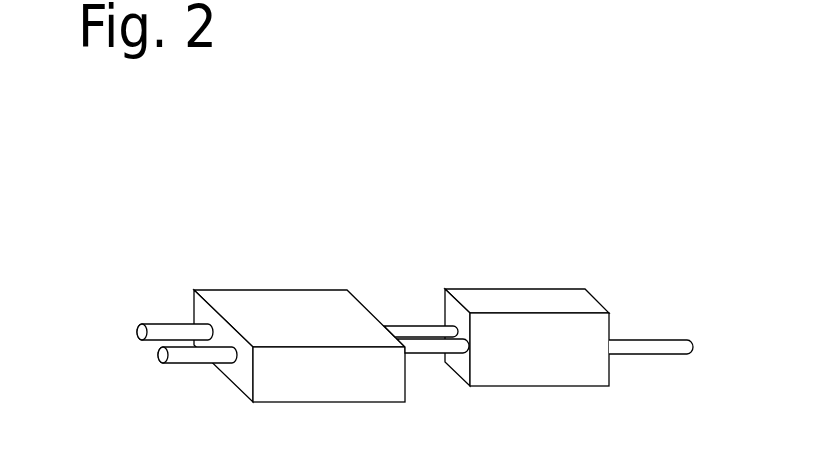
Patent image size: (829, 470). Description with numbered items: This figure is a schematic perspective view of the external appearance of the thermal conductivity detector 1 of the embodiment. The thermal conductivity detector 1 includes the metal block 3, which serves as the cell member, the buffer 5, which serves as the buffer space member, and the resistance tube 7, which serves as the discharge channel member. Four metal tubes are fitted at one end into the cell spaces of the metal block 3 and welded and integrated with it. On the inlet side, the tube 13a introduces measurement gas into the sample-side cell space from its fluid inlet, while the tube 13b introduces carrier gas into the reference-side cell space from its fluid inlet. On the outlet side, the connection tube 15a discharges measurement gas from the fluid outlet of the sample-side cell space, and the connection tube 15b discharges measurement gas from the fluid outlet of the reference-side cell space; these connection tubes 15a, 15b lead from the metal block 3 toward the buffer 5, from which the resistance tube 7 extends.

The thermal conductivity detector 1 is at (431, 233).
The metal block 3 is at (278, 288).
The buffer 5 is at (515, 288).
The resistance tube 7 is at (652, 338).
The tube 13a is at (170, 322).
The tube 13b is at (192, 365).
The connection tube 15a is at (408, 323).
The connection tube 15b is at (430, 355).